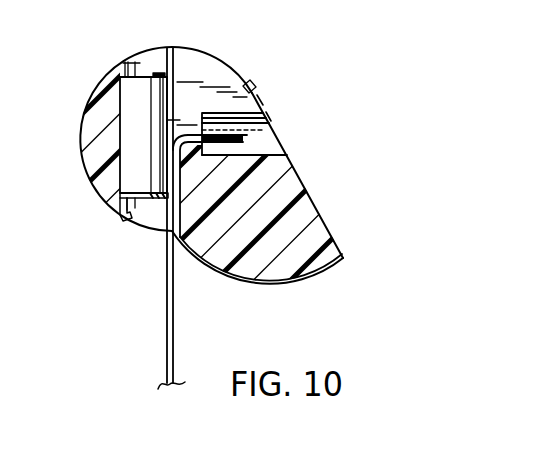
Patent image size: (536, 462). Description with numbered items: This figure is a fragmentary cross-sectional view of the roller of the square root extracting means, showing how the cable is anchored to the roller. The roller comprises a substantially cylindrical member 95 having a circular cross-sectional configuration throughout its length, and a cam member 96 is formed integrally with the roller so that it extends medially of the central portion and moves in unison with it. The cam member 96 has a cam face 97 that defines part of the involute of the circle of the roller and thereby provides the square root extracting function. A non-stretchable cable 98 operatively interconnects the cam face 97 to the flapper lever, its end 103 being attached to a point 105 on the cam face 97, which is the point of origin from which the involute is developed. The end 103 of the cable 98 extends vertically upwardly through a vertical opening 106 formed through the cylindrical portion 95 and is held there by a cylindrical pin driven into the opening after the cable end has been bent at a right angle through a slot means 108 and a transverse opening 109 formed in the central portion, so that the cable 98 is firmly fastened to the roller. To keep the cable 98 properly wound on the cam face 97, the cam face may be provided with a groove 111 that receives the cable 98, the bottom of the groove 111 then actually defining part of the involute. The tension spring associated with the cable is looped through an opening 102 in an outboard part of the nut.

The cylindrical member 95 is at (95, 116).
The cam member 96 is at (308, 208).
The cam face 97 is at (280, 278).
The cable 98 is at (167, 318).
The opening 102 is at (130, 170).
The end of cable 103 is at (188, 130).
The point on cam face 105 is at (177, 222).
The vertical opening 106 is at (153, 212).
The slot means 108 is at (233, 72).
The transverse opening 109 is at (250, 160).
The groove 111 is at (327, 268).